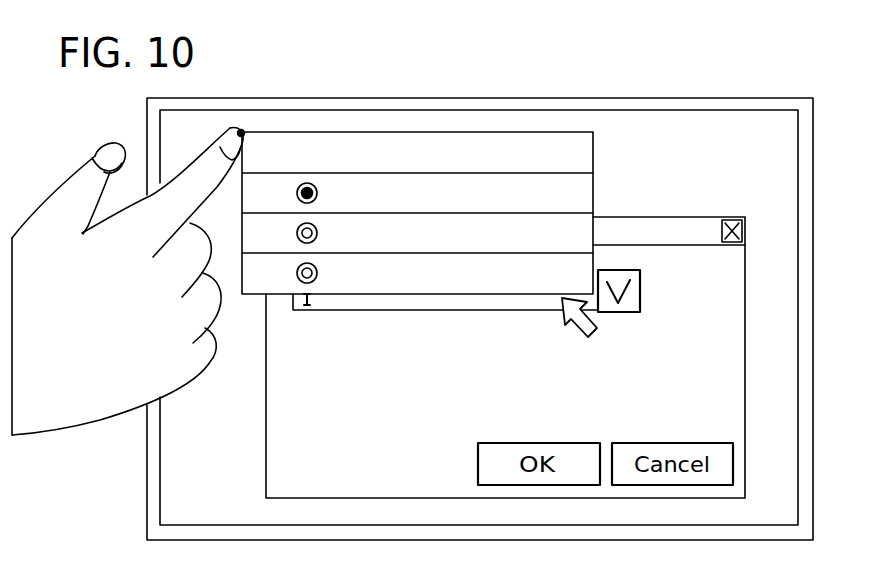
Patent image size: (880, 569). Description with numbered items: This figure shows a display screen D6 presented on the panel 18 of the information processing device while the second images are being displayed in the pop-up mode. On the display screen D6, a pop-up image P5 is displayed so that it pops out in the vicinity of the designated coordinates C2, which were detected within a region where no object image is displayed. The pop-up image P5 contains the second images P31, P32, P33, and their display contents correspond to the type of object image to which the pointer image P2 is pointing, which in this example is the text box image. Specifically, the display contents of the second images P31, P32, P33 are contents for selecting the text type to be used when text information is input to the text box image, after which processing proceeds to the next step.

The panel 18 is at (718, 75).
The display screen D6 is at (768, 120).
The pop-up image P5 is at (398, 132).
The second image P31 is at (575, 195).
The second image P32 is at (583, 223).
The second image P33 is at (580, 263).
The pointer image P2 is at (596, 332).
The designated coordinates C2 is at (242, 130).